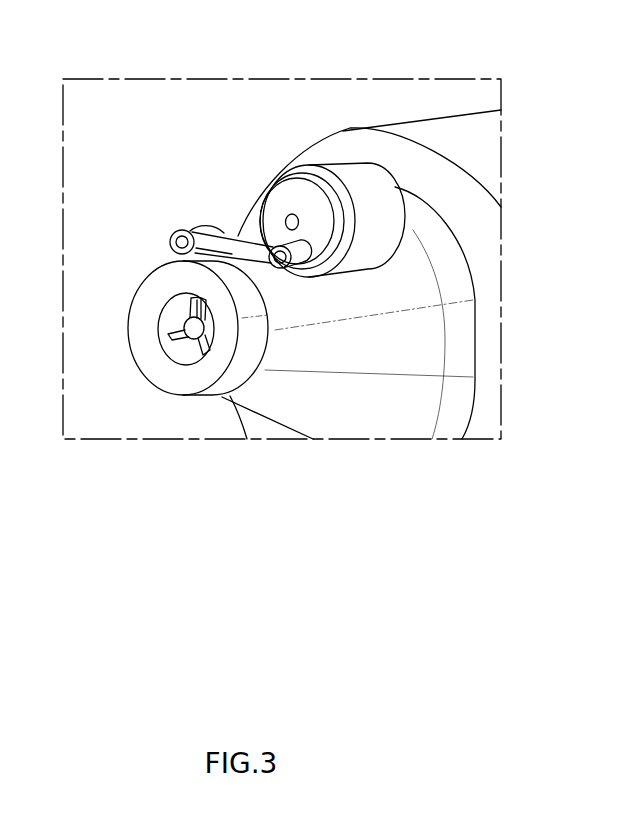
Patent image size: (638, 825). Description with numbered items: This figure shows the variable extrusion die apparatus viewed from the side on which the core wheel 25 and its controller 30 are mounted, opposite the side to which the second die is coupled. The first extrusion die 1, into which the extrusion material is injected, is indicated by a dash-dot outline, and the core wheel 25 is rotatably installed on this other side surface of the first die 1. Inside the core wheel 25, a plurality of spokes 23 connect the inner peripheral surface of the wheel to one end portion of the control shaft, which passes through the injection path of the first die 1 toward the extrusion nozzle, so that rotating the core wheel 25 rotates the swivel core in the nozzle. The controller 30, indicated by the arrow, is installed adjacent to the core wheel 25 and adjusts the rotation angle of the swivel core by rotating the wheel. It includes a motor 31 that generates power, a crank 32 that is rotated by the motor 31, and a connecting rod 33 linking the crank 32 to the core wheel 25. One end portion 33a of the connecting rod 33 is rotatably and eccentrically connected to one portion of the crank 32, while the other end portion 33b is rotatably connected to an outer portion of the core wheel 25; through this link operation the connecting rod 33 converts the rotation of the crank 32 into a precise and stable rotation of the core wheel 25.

The first extrusion die 1 is at (493, 298).
The spokes 23 is at (163, 312).
The core wheel 25 is at (185, 383).
The controller 30 is at (279, 135).
The motor 31 is at (347, 173).
The crank 32 is at (273, 211).
The connecting rod 33 is at (238, 232).
The one end portion of the connecting rod 33a is at (303, 252).
The other end portion of the connecting rod 33b is at (198, 232).